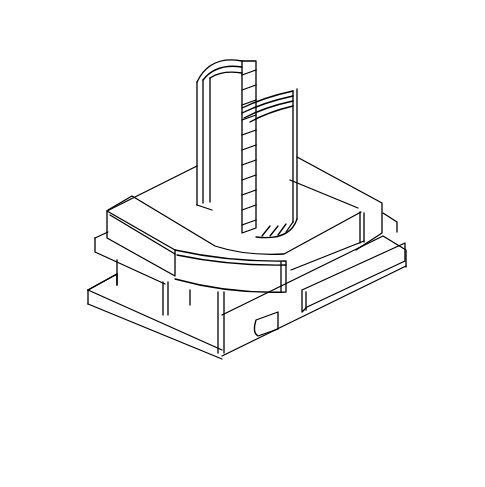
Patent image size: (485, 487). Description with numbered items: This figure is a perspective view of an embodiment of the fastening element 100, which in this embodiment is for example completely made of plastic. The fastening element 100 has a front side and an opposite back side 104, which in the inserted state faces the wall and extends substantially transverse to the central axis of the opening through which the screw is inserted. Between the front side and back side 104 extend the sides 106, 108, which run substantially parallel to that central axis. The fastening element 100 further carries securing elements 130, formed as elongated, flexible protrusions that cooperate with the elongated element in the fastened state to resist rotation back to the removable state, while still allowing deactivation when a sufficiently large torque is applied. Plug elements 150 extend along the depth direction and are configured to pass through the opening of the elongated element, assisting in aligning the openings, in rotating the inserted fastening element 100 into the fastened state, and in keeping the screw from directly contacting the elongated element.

The fastening element 100 is at (333, 98).
The back side 104 is at (321, 174).
The side 106 is at (306, 333).
The side 108 is at (115, 312).
The securing element 130 is at (237, 340).
The plug element 150 is at (222, 72).